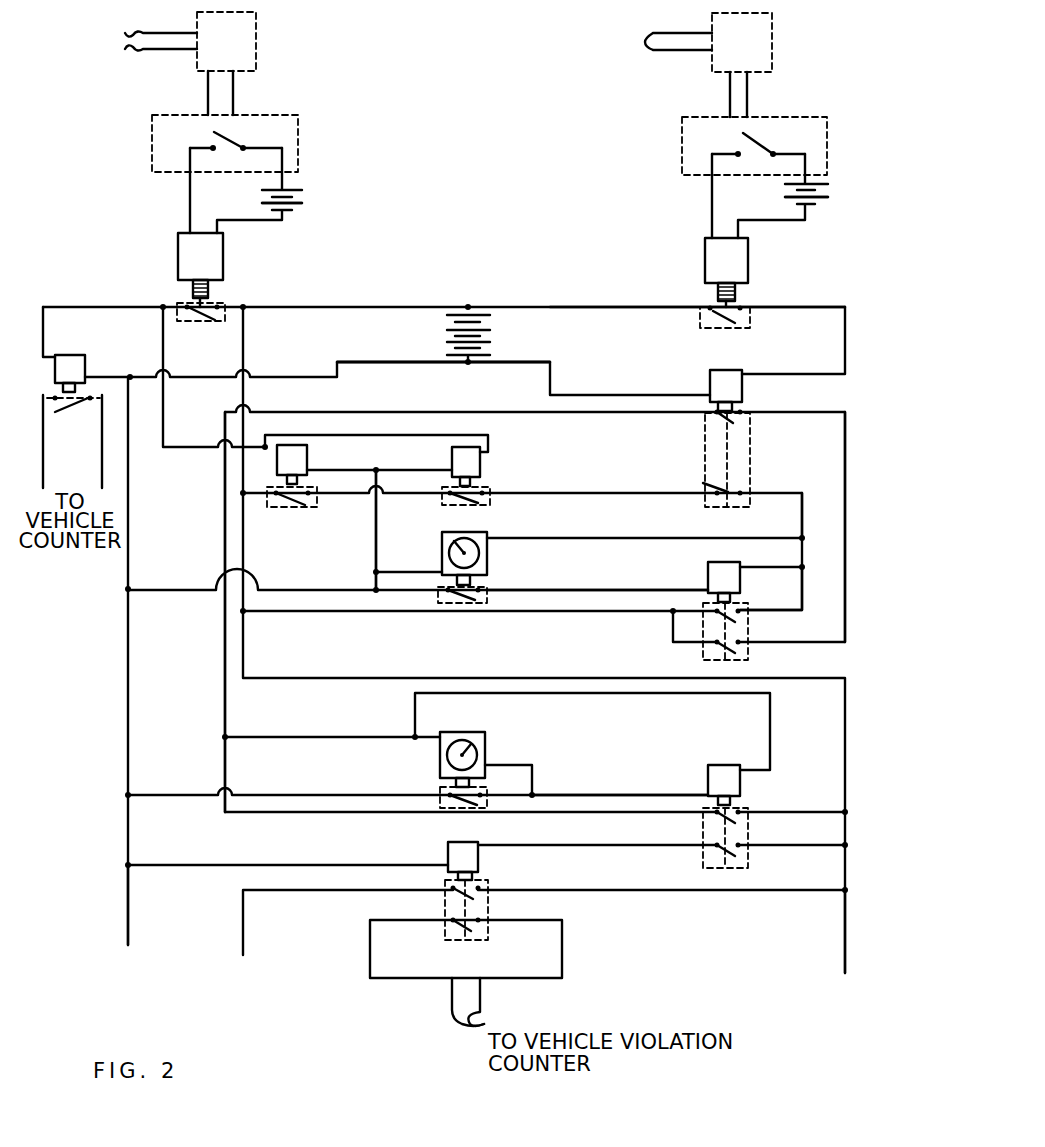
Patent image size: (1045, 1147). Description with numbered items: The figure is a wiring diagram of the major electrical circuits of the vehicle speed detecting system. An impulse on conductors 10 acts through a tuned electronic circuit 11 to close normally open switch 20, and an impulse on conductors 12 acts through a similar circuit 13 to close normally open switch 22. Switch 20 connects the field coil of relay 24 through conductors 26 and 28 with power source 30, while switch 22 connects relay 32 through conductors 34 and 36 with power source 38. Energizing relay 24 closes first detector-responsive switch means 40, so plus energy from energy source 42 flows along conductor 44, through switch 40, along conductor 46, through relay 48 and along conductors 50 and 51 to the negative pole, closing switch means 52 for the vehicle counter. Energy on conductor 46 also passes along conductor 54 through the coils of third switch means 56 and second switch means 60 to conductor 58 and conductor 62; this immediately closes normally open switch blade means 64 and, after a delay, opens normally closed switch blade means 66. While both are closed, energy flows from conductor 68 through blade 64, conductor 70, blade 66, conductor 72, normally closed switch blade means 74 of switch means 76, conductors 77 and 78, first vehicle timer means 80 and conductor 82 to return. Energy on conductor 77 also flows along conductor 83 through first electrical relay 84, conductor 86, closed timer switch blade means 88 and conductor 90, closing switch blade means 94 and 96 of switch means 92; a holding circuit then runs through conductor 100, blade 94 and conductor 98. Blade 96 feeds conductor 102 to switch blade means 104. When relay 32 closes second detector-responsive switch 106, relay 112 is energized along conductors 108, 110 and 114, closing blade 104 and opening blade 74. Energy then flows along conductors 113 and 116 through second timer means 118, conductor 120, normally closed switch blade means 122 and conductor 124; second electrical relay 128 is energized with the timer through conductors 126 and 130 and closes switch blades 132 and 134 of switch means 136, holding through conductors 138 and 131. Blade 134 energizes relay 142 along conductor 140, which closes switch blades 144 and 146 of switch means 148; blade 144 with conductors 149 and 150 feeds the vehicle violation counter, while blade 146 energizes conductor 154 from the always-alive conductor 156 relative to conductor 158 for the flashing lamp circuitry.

The conductors 10 is at (138, 41).
The tuned electronic circuit 11 is at (252, 58).
The conductors 12 is at (664, 44).
The tuned electronic circuit 13 is at (762, 48).
The normally open switch 20 is at (298, 150).
The normally open switch 22 is at (827, 137).
The relay 24 is at (215, 263).
The conductor 26 is at (190, 194).
The conductor 28 is at (305, 178).
The power source 30 is at (260, 189).
The relay 32 is at (714, 262).
The conductor 34 is at (712, 203).
The conductor 36 is at (828, 184).
The power source 38 is at (828, 200).
The first detector-responsive switch means 40 is at (200, 322).
The energy source 42 is at (490, 342).
The conductor 44 is at (372, 307).
The conductor 46 is at (133, 307).
The relay 48 is at (82, 360).
The conductor 50 is at (108, 377).
The conductor 51 is at (314, 372).
The switch means 52 is at (60, 412).
The conductor 54 is at (163, 345).
The third electrically operable switch means 56 is at (304, 459).
The conductor 58 is at (362, 452).
The second electrically operable switch means 60 is at (480, 462).
The conductor 62 is at (354, 584).
The switch blade means 64 is at (300, 507).
The switch blade means 66 is at (470, 505).
The conductor 68 is at (245, 392).
The conductor 70 is at (388, 530).
The conductor 72 is at (604, 493).
The switch blade means 74 is at (708, 485).
The switch means 76 is at (750, 458).
The conductor 77 is at (802, 522).
The conductor 78 is at (608, 540).
The first vehicle timer means 80 is at (487, 558).
The conductor 82 is at (390, 571).
The conductor 83 is at (802, 564).
The first electrical relay 84 is at (710, 574).
The conductor 86 is at (620, 589).
The first timer switch blade means 88 is at (487, 585).
The conductor 90 is at (426, 594).
The switch means 92 is at (748, 662).
The switch blade means 94 is at (740, 622).
The second switch blade means 96 is at (722, 648).
The conductor 98 is at (804, 606).
The conductor 100 is at (346, 616).
The conductor 102 is at (847, 630).
The switch blade means 104 is at (724, 424).
The second detector-responsive switch blade means 106 is at (746, 326).
The conductor 108 is at (604, 314).
The conductor 110 is at (845, 376).
The relay 112 is at (710, 388).
The conductor 113 is at (224, 538).
The conductor 114 is at (490, 368).
The conductor 116 is at (345, 739).
The second constant impulse providing timer means 118 is at (440, 747).
The conductor 120 is at (534, 778).
The switch blade means 122 is at (442, 794).
The conductor 124 is at (322, 794).
The conductor 126 is at (556, 694).
The second electrical relay 128 is at (738, 785).
The conductor 130 is at (676, 794).
The conductor 131 is at (226, 757).
The switch blade means 132 is at (716, 822).
The switch blade 134 is at (712, 853).
The switch means 136 is at (748, 830).
The conductor 138 is at (246, 662).
The conductor 140 is at (560, 844).
The relay 142 is at (440, 857).
The switch blade means 144 is at (474, 937).
The second switch blade means 146 is at (446, 897).
The switch means 148 is at (434, 933).
The conductor 149 is at (450, 1002).
The conductor 150 is at (482, 1000).
The conductor 154 is at (245, 955).
The conductor 156 is at (845, 970).
The conductor 158 is at (130, 942).